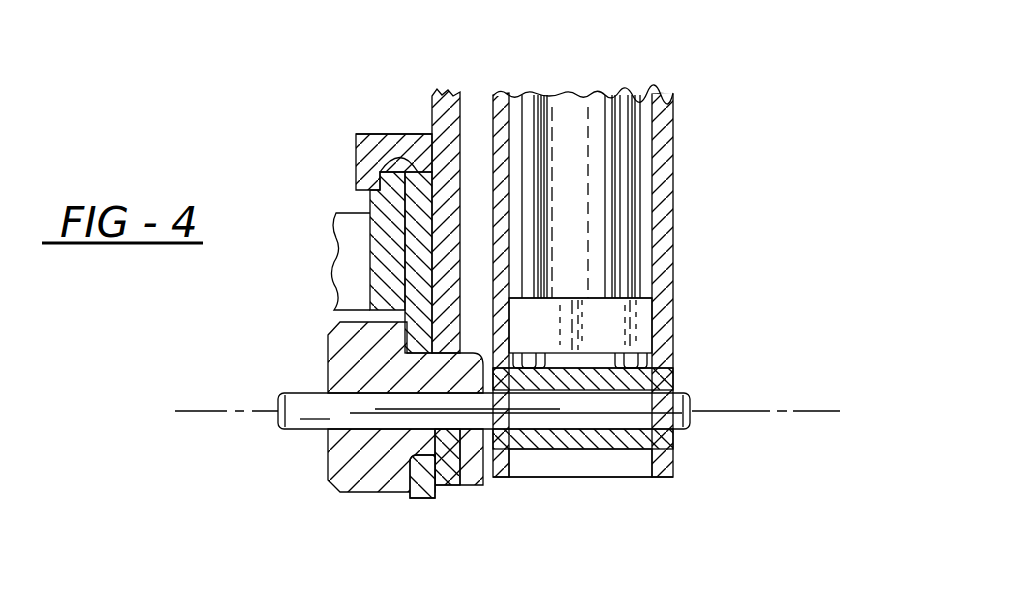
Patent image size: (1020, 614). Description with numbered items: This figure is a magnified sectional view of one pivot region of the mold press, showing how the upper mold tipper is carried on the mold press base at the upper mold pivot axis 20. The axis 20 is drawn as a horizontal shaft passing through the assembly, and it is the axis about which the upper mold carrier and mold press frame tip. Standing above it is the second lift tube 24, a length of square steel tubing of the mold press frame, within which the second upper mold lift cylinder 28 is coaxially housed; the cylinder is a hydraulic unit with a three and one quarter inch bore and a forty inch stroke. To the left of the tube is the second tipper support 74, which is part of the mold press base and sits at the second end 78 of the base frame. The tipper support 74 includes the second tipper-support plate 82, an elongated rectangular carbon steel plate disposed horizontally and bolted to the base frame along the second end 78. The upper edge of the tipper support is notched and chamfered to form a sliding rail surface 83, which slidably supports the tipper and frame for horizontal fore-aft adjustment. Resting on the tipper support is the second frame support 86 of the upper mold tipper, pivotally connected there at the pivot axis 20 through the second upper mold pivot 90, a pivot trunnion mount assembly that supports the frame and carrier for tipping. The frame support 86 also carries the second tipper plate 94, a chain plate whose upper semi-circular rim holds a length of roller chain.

The upper mold pivot axis 20 is at (818, 411).
The second lift tube 24 is at (673, 253).
The second upper mold lift cylinder 28 is at (602, 172).
The second tipper support 74 is at (382, 280).
The second end of the base frame 78 is at (334, 253).
The second tipper-support plate 82 is at (416, 226).
The sliding rail surface 83 is at (378, 176).
The second frame support 86 is at (361, 138).
The second upper mold pivot 90 is at (328, 481).
The second tipper plate 94 is at (457, 118).